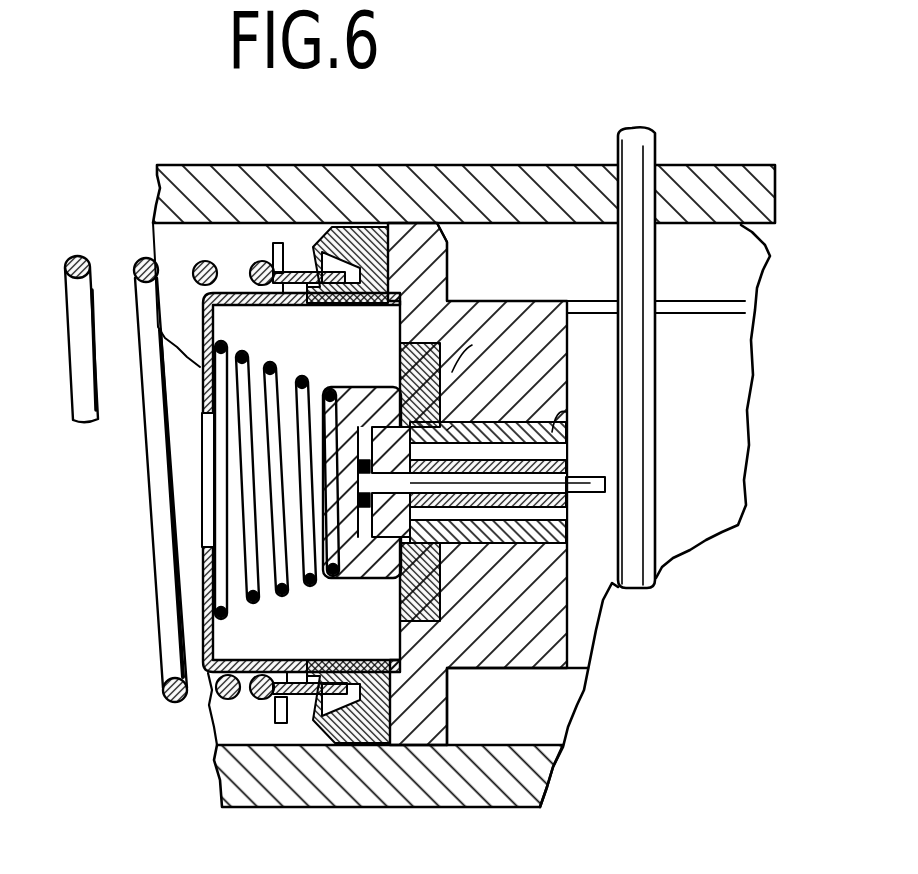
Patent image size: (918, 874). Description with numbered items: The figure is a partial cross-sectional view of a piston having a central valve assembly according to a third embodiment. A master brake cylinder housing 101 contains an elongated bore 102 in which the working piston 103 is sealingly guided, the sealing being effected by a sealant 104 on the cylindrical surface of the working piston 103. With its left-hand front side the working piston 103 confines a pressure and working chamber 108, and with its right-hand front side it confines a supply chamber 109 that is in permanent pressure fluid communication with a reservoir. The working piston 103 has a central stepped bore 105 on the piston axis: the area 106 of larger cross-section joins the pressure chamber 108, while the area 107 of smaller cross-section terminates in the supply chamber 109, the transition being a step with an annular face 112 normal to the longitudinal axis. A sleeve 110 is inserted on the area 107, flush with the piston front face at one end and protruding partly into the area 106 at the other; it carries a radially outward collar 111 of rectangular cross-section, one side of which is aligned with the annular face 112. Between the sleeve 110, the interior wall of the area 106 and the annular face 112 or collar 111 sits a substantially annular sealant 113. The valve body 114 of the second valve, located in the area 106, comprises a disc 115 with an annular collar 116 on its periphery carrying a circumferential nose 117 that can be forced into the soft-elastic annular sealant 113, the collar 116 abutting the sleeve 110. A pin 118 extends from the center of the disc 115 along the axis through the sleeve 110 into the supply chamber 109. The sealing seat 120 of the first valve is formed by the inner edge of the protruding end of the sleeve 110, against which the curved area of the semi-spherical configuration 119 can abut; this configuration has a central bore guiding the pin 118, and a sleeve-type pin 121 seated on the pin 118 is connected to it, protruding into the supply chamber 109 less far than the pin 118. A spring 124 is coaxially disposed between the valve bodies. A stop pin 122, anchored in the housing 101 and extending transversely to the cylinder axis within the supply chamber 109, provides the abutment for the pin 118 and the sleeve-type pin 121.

The master brake cylinder housing 101 is at (717, 172).
The elongated bore 102 is at (762, 242).
The working piston 103 is at (535, 330).
The sealant 104 is at (377, 240).
The central stepped bore 105 is at (227, 613).
The area of larger cross-section 106 is at (288, 347).
The area of smaller cross-section 107 is at (567, 437).
The pressure and working chamber 108 is at (128, 461).
The supply chamber 109 is at (715, 414).
The sleeve 110 is at (447, 430).
The collar 111 is at (470, 392).
The annular face 112 is at (447, 382).
The annular sealant 113 is at (448, 276).
The valve body 114 is at (320, 478).
The disc 115 is at (301, 494).
The annular collar 116 is at (368, 393).
The circumferential nose 117 is at (391, 568).
The pin 118 is at (583, 492).
The semi-spherical configuration 119 is at (366, 580).
The sealing seat 120 is at (401, 417).
The sleeve-type pin 121 is at (566, 520).
The stop pin 122 is at (640, 512).
The spring 124 is at (410, 450).